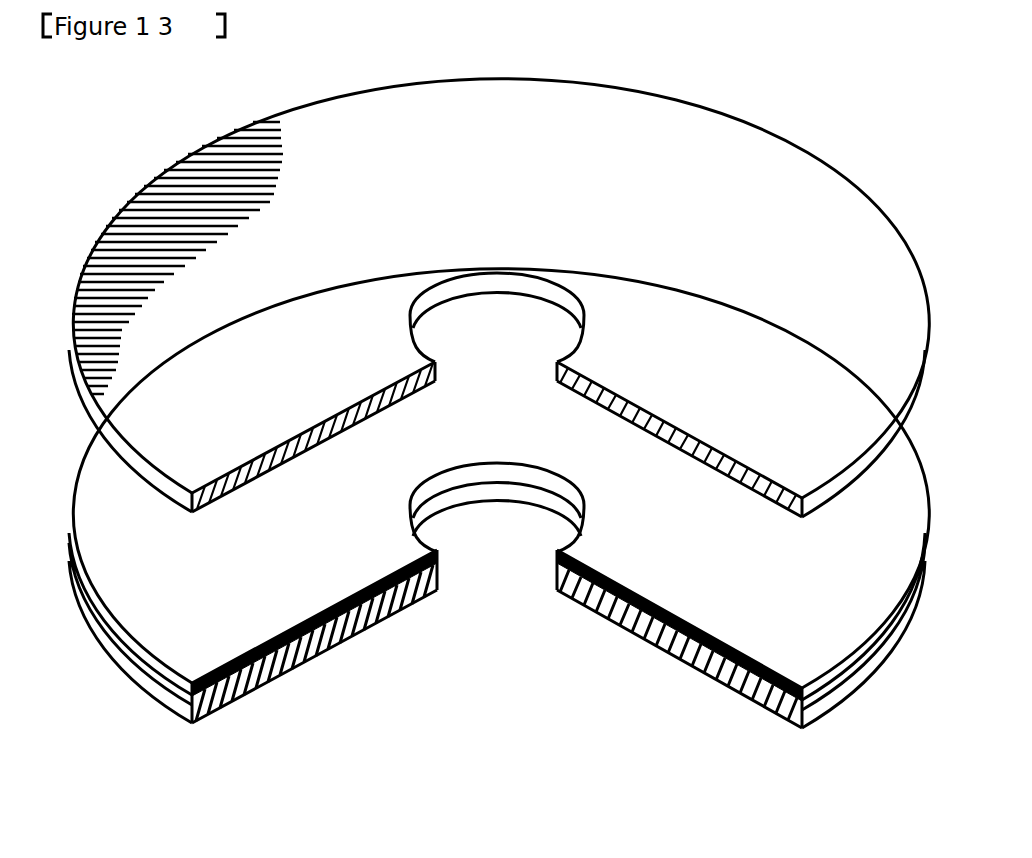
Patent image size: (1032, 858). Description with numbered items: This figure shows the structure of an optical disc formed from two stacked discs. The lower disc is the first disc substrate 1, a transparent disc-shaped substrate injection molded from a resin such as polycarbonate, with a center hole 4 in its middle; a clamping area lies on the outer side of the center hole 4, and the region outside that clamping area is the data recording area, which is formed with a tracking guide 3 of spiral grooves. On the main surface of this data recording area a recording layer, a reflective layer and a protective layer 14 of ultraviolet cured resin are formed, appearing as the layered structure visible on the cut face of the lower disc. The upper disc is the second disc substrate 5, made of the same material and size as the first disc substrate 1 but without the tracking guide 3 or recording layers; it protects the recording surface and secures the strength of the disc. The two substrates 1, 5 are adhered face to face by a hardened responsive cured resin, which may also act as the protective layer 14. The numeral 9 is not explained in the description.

The second disc substrate 5 is at (766, 368).
The center hole 4 is at (492, 347).
The first disc substrate 1 is at (298, 658).
The protective layer 14 is at (328, 593).
The recording layer 9 is at (583, 602).
The tracking guide 3 is at (703, 663).